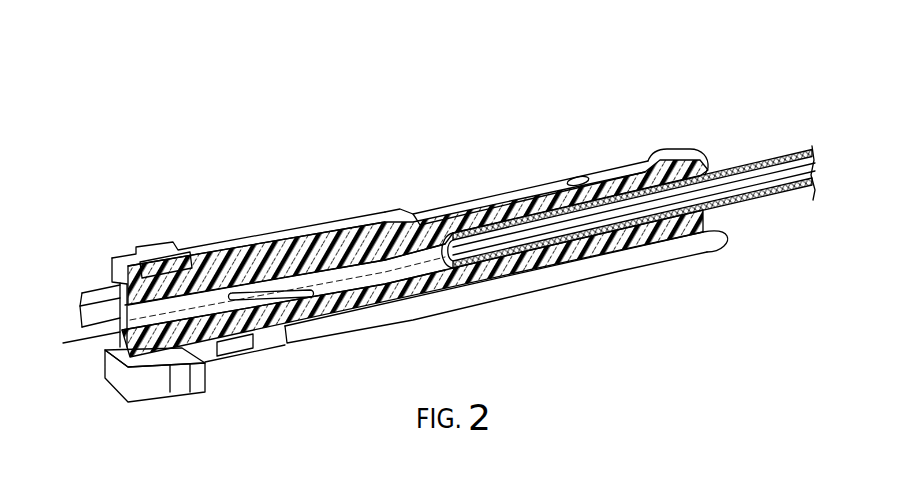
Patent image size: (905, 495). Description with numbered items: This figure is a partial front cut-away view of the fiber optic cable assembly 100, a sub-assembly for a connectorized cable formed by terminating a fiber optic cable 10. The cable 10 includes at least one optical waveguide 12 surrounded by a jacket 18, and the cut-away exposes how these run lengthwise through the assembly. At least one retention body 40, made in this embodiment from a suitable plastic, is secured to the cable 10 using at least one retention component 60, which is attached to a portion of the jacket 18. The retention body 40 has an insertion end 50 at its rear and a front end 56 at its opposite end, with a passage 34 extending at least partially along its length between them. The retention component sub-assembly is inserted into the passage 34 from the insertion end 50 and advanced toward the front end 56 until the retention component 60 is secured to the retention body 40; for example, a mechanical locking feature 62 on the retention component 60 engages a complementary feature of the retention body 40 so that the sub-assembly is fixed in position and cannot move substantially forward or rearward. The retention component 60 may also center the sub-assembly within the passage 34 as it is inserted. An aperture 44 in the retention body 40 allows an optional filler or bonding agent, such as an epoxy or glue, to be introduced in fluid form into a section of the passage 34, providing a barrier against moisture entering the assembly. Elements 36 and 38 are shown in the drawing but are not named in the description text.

The fiber optic cable assembly 100 is at (488, 97).
The fiber optic cable 10 is at (797, 212).
The optical waveguide 12 is at (93, 340).
The jacket 18 is at (750, 170).
The passage 34 is at (317, 297).
The housing block 36 is at (279, 282).
The tab 38 is at (88, 292).
The retention body 40 is at (432, 210).
The aperture 44 is at (577, 178).
The insertion end 50 is at (735, 227).
The front end 56 is at (110, 393).
The retention component 60 is at (560, 253).
The mechanical locking feature 62 is at (543, 207).